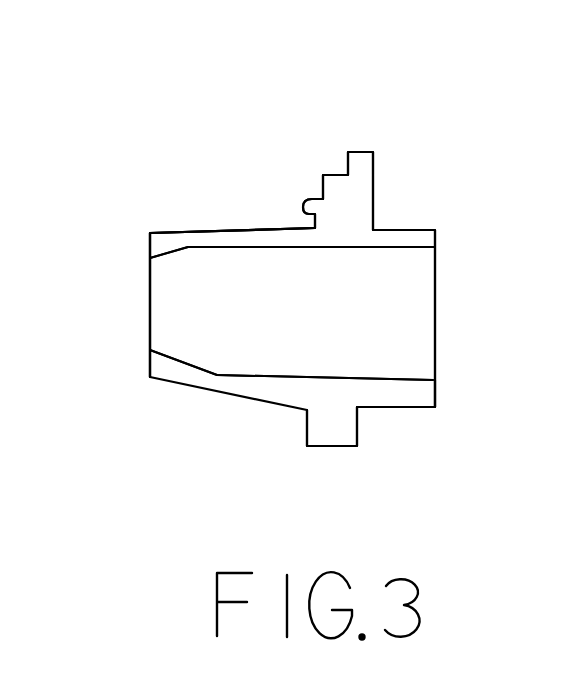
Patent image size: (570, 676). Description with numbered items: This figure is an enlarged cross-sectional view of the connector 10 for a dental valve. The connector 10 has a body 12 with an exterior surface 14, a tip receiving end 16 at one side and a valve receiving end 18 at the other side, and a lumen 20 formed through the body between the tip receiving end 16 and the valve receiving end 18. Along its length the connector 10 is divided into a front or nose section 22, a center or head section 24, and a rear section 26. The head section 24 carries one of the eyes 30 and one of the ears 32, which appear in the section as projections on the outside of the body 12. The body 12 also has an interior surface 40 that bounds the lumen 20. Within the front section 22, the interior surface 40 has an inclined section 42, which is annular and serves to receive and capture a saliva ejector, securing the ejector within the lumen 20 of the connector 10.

The connector 10 is at (289, 100).
The body 12 is at (418, 193).
The exterior surface 14 is at (202, 230).
The tip receiving end 16 is at (127, 303).
The valve receiving end 18 is at (452, 337).
The lumen 20 is at (282, 335).
The front section 22 is at (240, 228).
The head section 24 is at (328, 433).
The rear section 26 is at (408, 397).
The eye 30 is at (303, 203).
The ear 32 is at (363, 152).
The interior surface 40 is at (328, 252).
The inclined section 42 is at (172, 260).